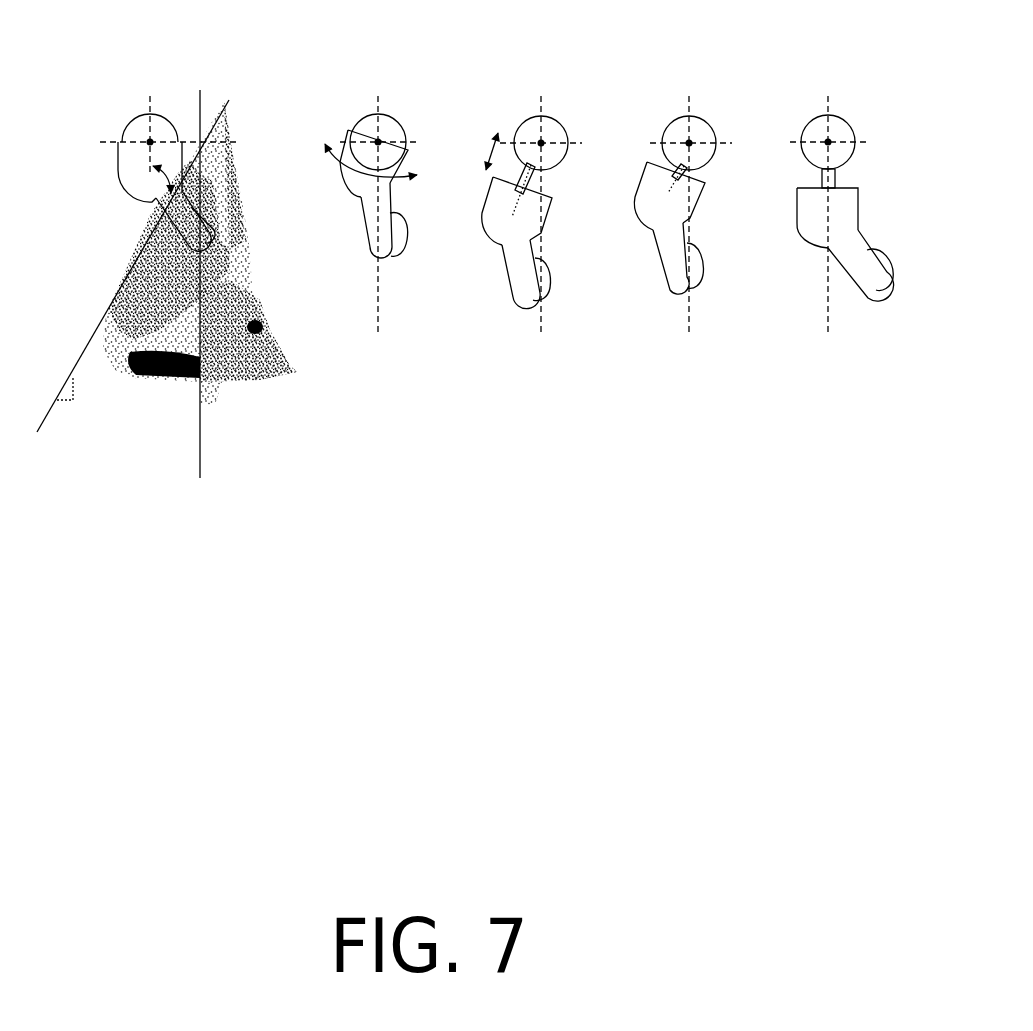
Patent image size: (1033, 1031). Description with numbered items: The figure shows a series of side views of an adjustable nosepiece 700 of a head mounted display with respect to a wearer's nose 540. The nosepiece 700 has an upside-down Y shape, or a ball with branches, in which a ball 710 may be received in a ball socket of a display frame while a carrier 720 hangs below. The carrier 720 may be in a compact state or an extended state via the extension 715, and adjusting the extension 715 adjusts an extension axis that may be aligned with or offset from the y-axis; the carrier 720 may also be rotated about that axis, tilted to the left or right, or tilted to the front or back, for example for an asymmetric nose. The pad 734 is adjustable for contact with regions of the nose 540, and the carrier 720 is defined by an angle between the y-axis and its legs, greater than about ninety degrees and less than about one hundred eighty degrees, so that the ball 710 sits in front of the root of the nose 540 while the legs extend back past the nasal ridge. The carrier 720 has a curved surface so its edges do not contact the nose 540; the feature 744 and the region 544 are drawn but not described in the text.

The nosepiece 700 is at (130, 99).
The ball 710 is at (140, 135).
The extension 715 is at (541, 174).
The carrier 720 is at (135, 168).
The leg 734 is at (158, 206).
The tip lobe 744 is at (205, 226).
The nose 540 is at (115, 466).
The nose region 544 is at (220, 252).